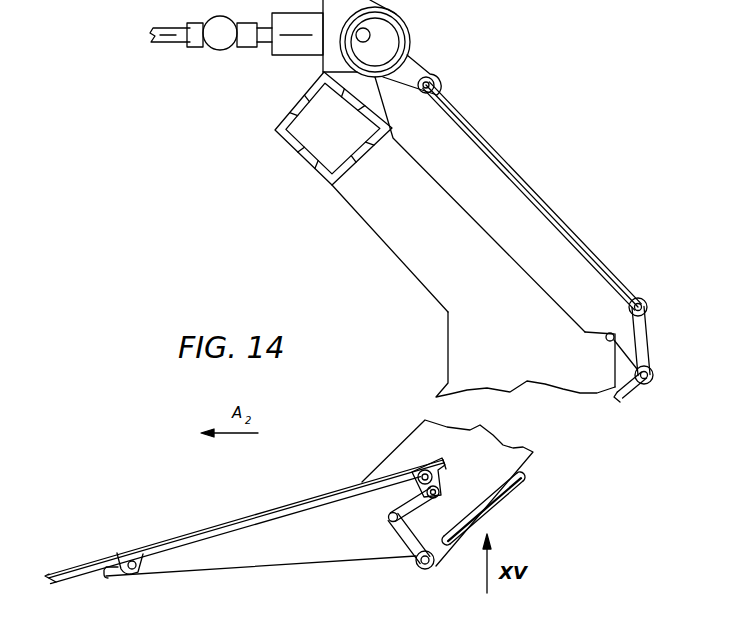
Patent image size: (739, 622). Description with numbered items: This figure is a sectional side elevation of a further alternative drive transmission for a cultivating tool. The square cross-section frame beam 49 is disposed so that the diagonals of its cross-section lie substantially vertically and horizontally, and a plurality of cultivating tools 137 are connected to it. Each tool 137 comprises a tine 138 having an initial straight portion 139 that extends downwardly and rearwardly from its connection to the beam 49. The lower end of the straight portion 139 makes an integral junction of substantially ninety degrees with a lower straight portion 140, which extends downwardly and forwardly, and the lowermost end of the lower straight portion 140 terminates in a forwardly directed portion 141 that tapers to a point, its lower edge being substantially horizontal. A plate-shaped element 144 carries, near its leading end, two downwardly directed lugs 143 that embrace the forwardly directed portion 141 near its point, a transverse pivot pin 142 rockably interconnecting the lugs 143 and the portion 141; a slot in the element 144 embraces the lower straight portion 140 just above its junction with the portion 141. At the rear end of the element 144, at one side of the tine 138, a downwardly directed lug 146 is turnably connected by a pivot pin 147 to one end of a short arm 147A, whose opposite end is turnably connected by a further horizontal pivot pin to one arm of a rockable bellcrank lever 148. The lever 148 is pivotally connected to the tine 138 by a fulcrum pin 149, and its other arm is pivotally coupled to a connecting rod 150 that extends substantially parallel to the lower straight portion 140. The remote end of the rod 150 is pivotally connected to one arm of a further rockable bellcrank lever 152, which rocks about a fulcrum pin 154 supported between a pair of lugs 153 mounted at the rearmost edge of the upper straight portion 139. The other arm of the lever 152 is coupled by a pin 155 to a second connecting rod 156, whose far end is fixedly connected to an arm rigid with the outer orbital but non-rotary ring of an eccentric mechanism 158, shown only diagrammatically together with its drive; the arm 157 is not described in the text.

The frame beam 49 is at (296, 104).
The cultivating tool 137 is at (338, 262).
The tine 138 is at (444, 344).
The initial straight portion 139 is at (460, 213).
The lower straight portion 140 is at (537, 380).
The forwardly directed portion 141 is at (203, 518).
The transverse pivot pin 142 is at (126, 558).
The downwardly directed lugs 143 is at (120, 557).
The plate-shaped element 144 is at (249, 516).
The downwardly directed lug 146 is at (438, 470).
The pivot pin 147 is at (425, 469).
The short arm 147A is at (418, 487).
The bellcrank lever 148 is at (407, 537).
The fulcrum pin 149 is at (385, 521).
The connecting rod 150 is at (621, 399).
The further bellcrank lever 152 is at (628, 315).
The lugs 153 is at (600, 340).
The fulcrum pin 154 is at (618, 334).
The pin 155 is at (644, 297).
The second connecting rod 156 is at (513, 163).
The arm 157 is at (412, 72).
The eccentric mechanism 158 is at (407, 30).